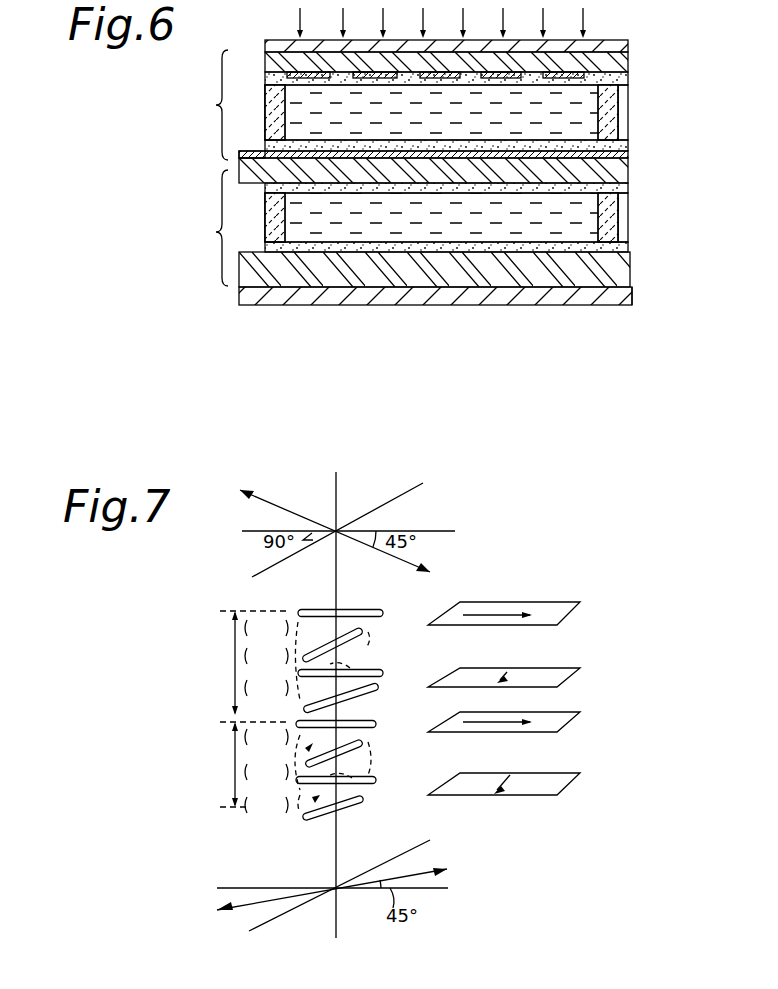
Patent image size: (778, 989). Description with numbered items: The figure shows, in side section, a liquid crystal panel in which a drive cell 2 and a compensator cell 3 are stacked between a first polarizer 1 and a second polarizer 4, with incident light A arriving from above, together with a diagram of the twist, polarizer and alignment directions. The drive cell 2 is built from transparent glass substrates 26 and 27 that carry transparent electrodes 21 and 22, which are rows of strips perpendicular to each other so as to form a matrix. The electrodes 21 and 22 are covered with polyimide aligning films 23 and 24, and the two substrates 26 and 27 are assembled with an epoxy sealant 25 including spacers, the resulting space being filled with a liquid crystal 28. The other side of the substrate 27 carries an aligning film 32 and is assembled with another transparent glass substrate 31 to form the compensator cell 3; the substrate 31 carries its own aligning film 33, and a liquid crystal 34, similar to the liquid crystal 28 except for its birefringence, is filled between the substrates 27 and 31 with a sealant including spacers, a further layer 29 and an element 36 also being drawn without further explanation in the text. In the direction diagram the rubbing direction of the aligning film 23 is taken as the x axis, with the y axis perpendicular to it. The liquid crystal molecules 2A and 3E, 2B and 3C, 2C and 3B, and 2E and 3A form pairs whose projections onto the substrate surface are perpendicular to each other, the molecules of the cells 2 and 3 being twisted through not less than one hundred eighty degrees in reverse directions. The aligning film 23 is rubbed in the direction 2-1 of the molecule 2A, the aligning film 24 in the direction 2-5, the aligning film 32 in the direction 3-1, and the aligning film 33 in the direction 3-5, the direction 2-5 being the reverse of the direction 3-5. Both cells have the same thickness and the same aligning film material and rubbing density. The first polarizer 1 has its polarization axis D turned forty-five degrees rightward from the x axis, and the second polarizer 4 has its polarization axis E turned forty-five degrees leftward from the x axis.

In FIG. 6, the first polarizer 1 is at (632, 45).
In FIG. 6, the drive cell 2 is at (213, 105).
In FIG. 7, the drive cell 2 is at (235, 660).
In FIG. 6, the compensator cell 3 is at (213, 228).
In FIG. 7, the compensator cell 3 is at (235, 765).
In FIG. 6, the second polarizer 4 is at (623, 296).
In FIG. 6, the transparent electrode 21 is at (600, 78).
In FIG. 6, the transparent electrode 22 is at (630, 156).
In FIG. 6, the aligning film 23 is at (622, 87).
In FIG. 7, the aligning film 23 is at (521, 590).
In FIG. 6, the aligning film 24 is at (625, 143).
In FIG. 7, the aligning film 24 is at (521, 660).
In FIG. 6, the epoxy sealant 25 is at (605, 108).
In FIG. 6, the transparent glass substrate 26 is at (266, 62).
In FIG. 6, the transparent glass substrate 27 is at (259, 160).
In FIG. 6, the liquid crystal 28 is at (580, 133).
In FIG. 7, the liquid crystal 28 is at (247, 642).
In FIG. 6, the electrode layer 29 is at (625, 247).
In FIG. 6, the transparent glass substrate 31 is at (623, 278).
In FIG. 6, the aligning film 32 is at (625, 190).
In FIG. 7, the aligning film 32 is at (521, 710).
In FIG. 6, the aligning film 33 is at (628, 252).
In FIG. 7, the aligning film 33 is at (521, 778).
In FIG. 6, the liquid crystal 34 is at (590, 222).
In FIG. 7, the polarizer 36 is at (250, 806).
In FIG. 6, the incident light A is at (585, 13).
In FIG. 7, the polarization axis D is at (281, 505).
In FIG. 7, the polarization axis E is at (432, 872).
In FIG. 7, the x axis x is at (253, 530).
In FIG. 7, the y axis y is at (405, 494).
In FIG. 7, the liquid crystal molecule 2A is at (358, 609).
In FIG. 7, the liquid crystal molecule 2B is at (356, 644).
In FIG. 7, the liquid crystal molecule 2C is at (356, 667).
In FIG. 7, the liquid crystal molecule 2E is at (358, 695).
In FIG. 7, the liquid crystal molecule 3A is at (355, 723).
In FIG. 7, the liquid crystal molecule 3B is at (359, 753).
In FIG. 7, the liquid crystal molecule 3C is at (355, 775).
In FIG. 7, the liquid crystal molecule 3E is at (352, 804).
In FIG. 7, the rubbing direction 2-1 is at (507, 615).
In FIG. 7, the rubbing direction 2-5 is at (497, 672).
In FIG. 7, the rubbing direction 3-1 is at (510, 722).
In FIG. 7, the rubbing direction 3-5 is at (505, 778).